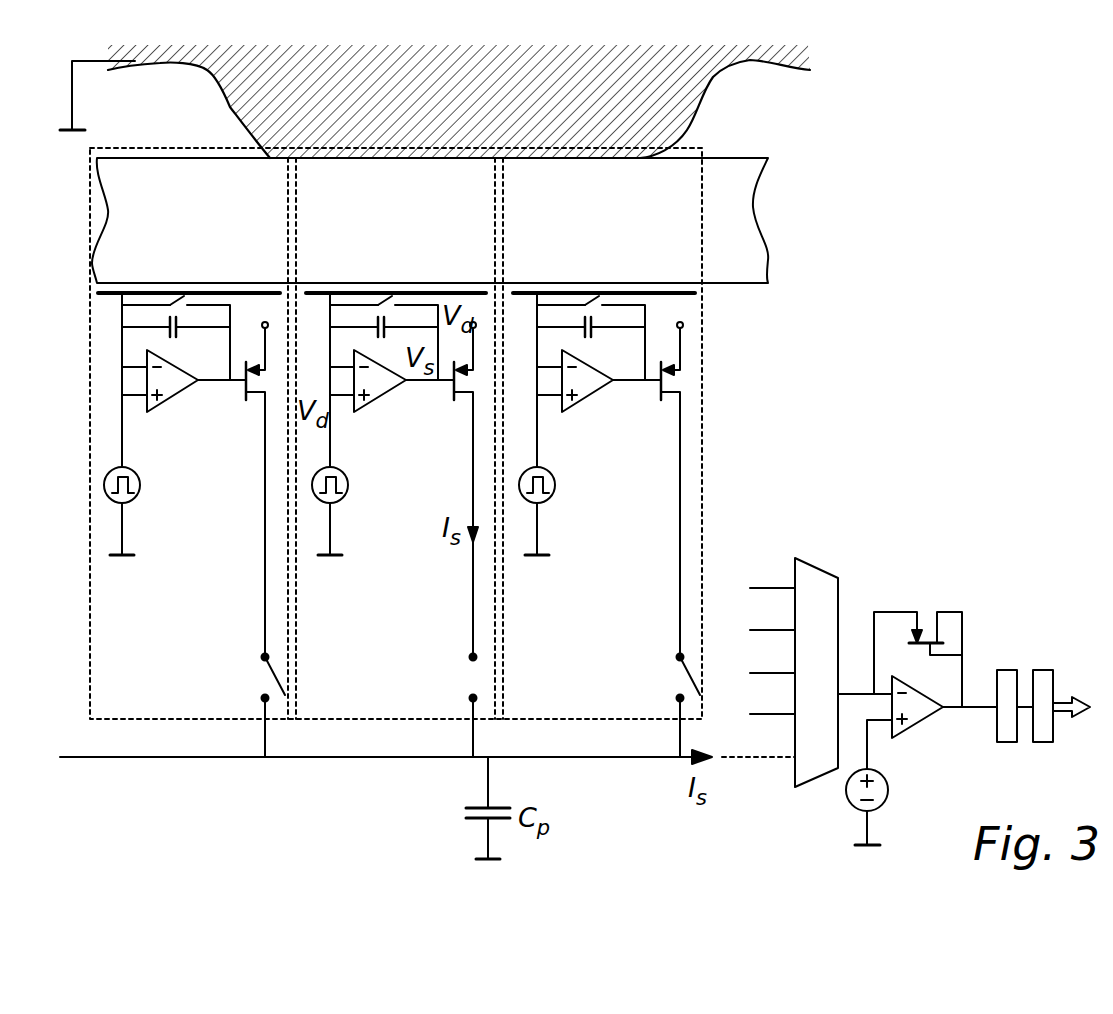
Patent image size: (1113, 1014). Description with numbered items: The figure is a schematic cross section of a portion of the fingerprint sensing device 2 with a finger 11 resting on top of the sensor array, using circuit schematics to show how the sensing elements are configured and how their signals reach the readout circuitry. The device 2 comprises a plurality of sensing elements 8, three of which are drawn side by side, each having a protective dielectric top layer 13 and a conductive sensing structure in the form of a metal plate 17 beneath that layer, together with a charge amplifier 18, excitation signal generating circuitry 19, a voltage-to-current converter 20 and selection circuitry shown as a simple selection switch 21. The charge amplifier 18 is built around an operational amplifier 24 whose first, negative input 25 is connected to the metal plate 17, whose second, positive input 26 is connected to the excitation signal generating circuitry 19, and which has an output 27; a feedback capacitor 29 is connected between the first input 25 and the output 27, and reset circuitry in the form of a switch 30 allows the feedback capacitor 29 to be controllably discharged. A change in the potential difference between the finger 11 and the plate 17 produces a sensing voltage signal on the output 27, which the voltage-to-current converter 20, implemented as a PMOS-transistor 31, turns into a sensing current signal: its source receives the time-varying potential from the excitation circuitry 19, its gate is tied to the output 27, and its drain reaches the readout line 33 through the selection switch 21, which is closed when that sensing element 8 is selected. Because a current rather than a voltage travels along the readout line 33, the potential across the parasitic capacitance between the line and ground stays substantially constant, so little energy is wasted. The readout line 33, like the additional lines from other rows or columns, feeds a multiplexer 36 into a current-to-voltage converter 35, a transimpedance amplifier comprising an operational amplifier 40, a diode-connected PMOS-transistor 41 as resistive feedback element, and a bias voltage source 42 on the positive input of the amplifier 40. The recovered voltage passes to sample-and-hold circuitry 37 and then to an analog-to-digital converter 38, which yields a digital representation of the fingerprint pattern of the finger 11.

The fingerprint sensing device 2 is at (930, 130).
The sensing element 8 is at (330, 741).
The finger 11 is at (468, 100).
The protective dielectric top layer 13 is at (418, 220).
The metal plate 17 is at (463, 293).
The charge amplifier 18 is at (379, 426).
The excitation signal generating circuitry 19 is at (347, 493).
The voltage-to-current converter 20 is at (438, 412).
The selection switch 21 is at (456, 665).
The operational amplifier 24 is at (380, 360).
The first input 25 is at (352, 368).
The second input 26 is at (343, 403).
The output 27 is at (407, 385).
The feedback capacitor 29 is at (404, 308).
The switch 30 is at (390, 300).
The PMOS-transistor 31 is at (475, 392).
The readout line 33 is at (357, 757).
The current-to-voltage converter 35 is at (958, 594).
The multiplexer 36 is at (815, 570).
The sample-and-hold circuitry 37 is at (1003, 670).
The analog-to-digital converter 38 is at (1042, 670).
The operational amplifier 40 is at (930, 717).
The diode-connected PMOS-transistor 41 is at (930, 623).
The bias voltage source 42 is at (888, 790).